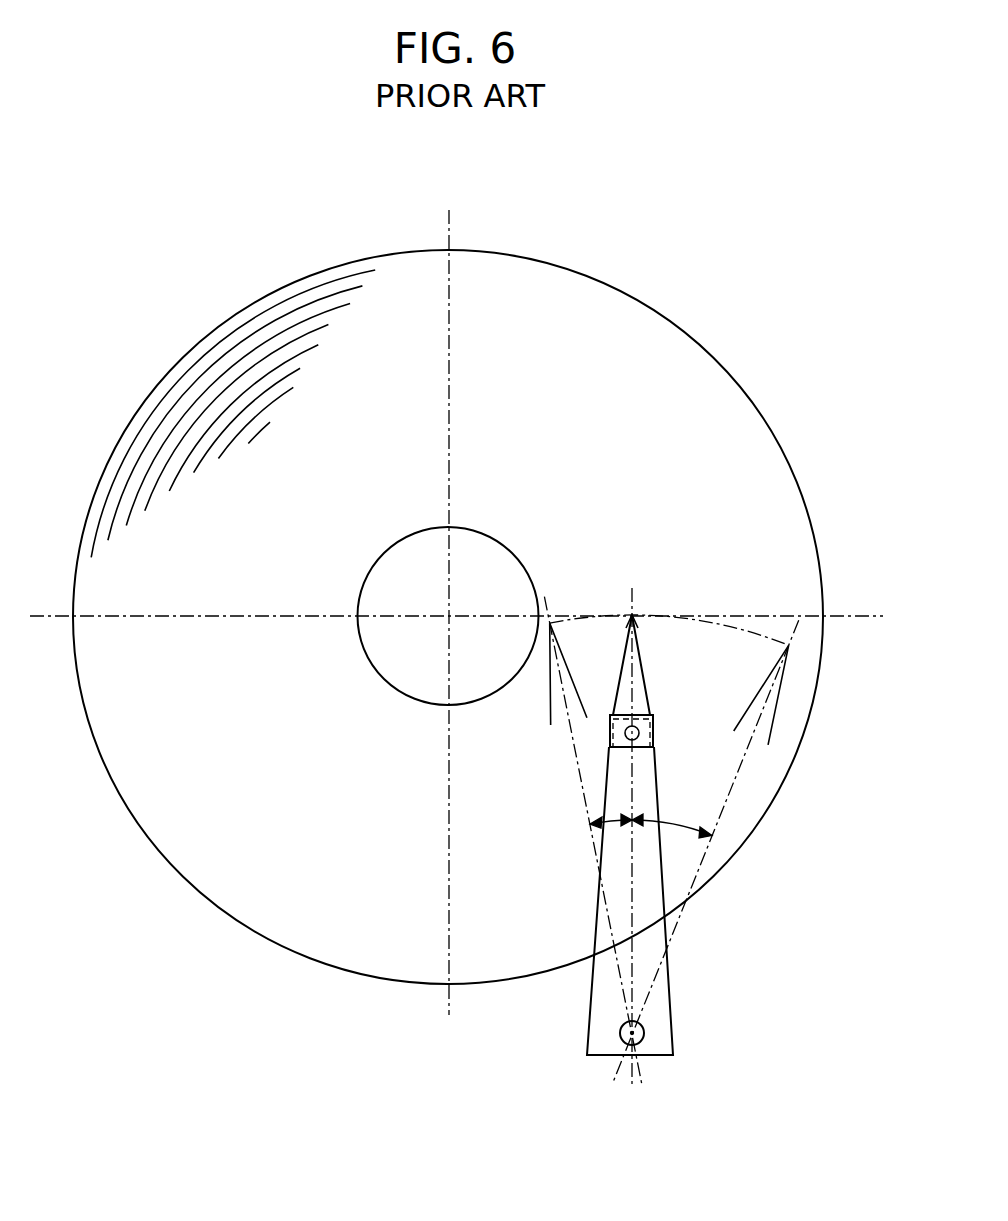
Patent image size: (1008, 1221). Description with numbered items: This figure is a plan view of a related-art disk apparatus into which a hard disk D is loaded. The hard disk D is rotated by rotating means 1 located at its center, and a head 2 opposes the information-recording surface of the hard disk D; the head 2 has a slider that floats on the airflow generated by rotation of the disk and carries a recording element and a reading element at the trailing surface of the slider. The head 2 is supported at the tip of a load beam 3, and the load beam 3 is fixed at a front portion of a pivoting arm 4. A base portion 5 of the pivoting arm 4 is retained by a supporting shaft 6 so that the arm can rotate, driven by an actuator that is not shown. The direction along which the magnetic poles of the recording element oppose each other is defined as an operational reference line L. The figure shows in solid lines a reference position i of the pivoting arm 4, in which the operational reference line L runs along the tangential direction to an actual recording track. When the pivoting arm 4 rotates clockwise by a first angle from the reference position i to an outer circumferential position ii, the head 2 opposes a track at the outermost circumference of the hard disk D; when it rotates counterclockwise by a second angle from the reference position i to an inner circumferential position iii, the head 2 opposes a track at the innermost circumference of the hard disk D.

The rotating means 1 is at (402, 568).
The head 2 is at (636, 616).
The load beam 3 is at (640, 677).
The pivoting arm 4 is at (655, 940).
The base portion 5 is at (644, 1032).
The supporting shaft 6 is at (619, 1034).
The hard disk D is at (668, 362).
The operational reference line L is at (674, 820).
The reference position i is at (660, 800).
The outer circumferential position ii is at (748, 754).
The inner circumferential position iii is at (572, 753).